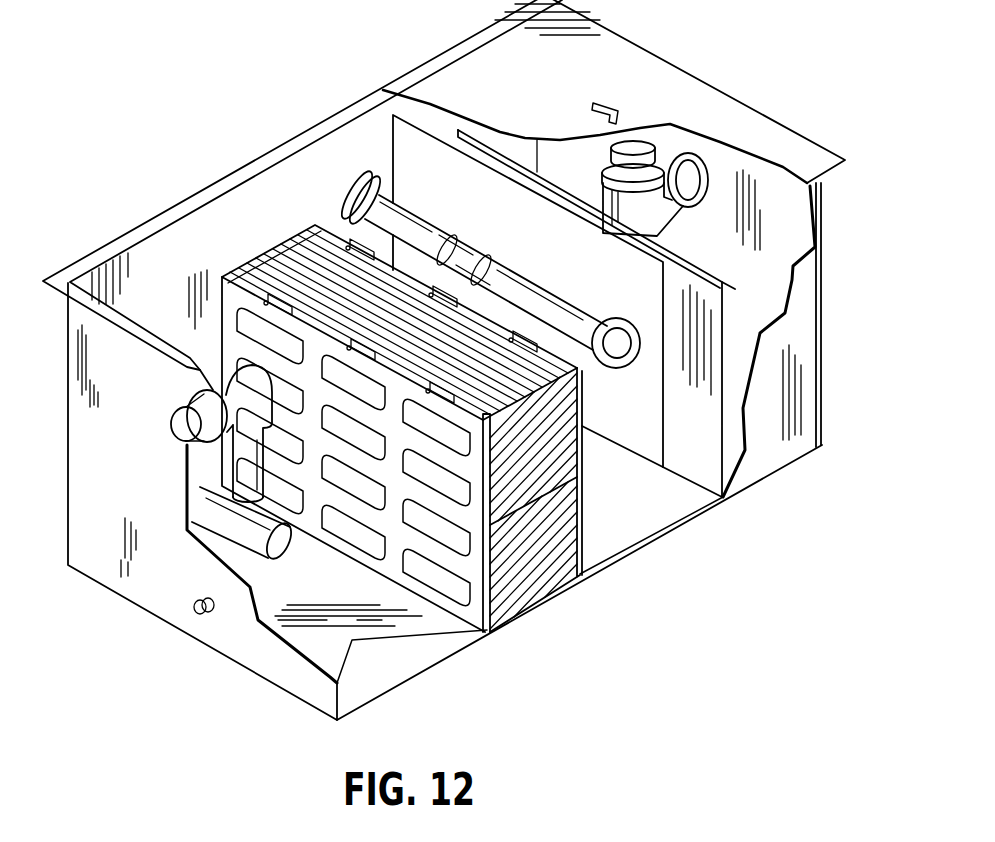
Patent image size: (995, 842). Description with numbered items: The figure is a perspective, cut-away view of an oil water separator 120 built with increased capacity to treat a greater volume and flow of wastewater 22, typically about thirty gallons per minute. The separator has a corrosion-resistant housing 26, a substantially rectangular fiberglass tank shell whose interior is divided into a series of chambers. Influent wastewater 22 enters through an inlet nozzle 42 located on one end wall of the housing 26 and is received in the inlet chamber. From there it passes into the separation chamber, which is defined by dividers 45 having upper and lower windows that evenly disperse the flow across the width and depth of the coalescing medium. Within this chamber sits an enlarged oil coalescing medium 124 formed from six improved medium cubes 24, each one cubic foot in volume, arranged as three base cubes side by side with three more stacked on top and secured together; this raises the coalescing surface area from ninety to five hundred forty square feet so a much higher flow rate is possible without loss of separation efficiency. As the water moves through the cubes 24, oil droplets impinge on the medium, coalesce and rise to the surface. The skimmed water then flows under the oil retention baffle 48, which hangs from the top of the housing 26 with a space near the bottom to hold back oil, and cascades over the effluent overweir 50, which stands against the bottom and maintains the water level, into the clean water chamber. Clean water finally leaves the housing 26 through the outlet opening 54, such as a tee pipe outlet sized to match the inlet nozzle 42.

The oil water separator 120 is at (350, 70).
The flow of wastewater 22 is at (88, 419).
The oil coalescing medium 24 is at (269, 249).
The housing 26 is at (840, 259).
The inlet nozzle 42 is at (212, 452).
The divider 45 is at (462, 611).
The oil retention baffle 48 is at (428, 168).
The effluent overweir 50 is at (700, 456).
The outlet opening 54 is at (693, 160).
The enlarged oil coalescing medium 124 is at (300, 250).